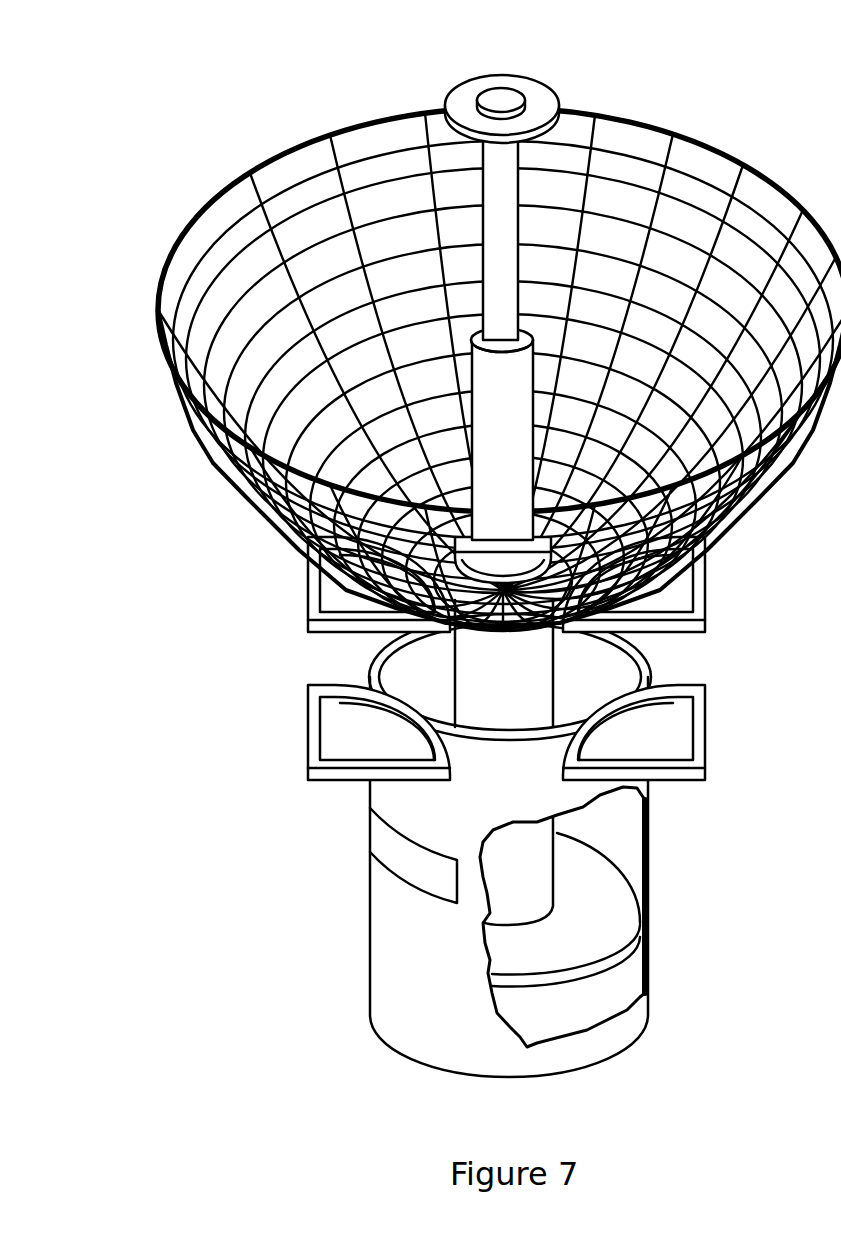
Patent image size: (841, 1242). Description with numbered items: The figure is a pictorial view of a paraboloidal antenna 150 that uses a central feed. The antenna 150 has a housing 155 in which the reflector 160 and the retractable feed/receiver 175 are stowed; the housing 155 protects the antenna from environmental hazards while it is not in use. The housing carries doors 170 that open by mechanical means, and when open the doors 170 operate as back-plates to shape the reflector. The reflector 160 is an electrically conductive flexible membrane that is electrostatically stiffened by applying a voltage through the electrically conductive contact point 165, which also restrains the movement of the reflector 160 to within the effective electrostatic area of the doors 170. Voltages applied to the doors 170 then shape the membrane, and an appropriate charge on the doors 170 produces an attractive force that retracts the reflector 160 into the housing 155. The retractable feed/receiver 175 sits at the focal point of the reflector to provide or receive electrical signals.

The paraboloidal antenna 150 is at (275, 145).
The housing 155 is at (373, 953).
The reflector 160 is at (222, 488).
The electrically conductive contact point 165 is at (238, 378).
The doors 170 is at (707, 712).
The retractable feed/receiver 175 is at (558, 103).